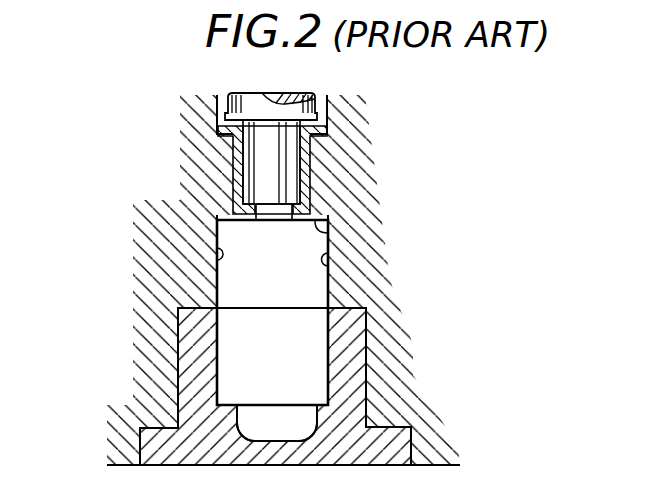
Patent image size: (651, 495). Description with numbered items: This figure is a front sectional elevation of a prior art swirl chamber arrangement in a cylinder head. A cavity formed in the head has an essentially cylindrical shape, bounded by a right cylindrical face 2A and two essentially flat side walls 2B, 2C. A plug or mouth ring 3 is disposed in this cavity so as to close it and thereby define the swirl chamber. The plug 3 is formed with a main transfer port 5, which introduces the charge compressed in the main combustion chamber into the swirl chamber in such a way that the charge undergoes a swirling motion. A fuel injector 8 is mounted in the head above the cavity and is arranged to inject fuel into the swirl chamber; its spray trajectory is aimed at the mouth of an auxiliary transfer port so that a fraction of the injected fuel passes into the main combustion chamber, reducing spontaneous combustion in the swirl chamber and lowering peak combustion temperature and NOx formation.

The fuel injector 8 is at (253, 146).
The right cylindrical face 2A is at (322, 236).
The flat side wall 2B is at (217, 255).
The flat side wall 2C is at (321, 261).
The plug or mouth ring 3 is at (190, 346).
The main transfer port 5 is at (287, 418).